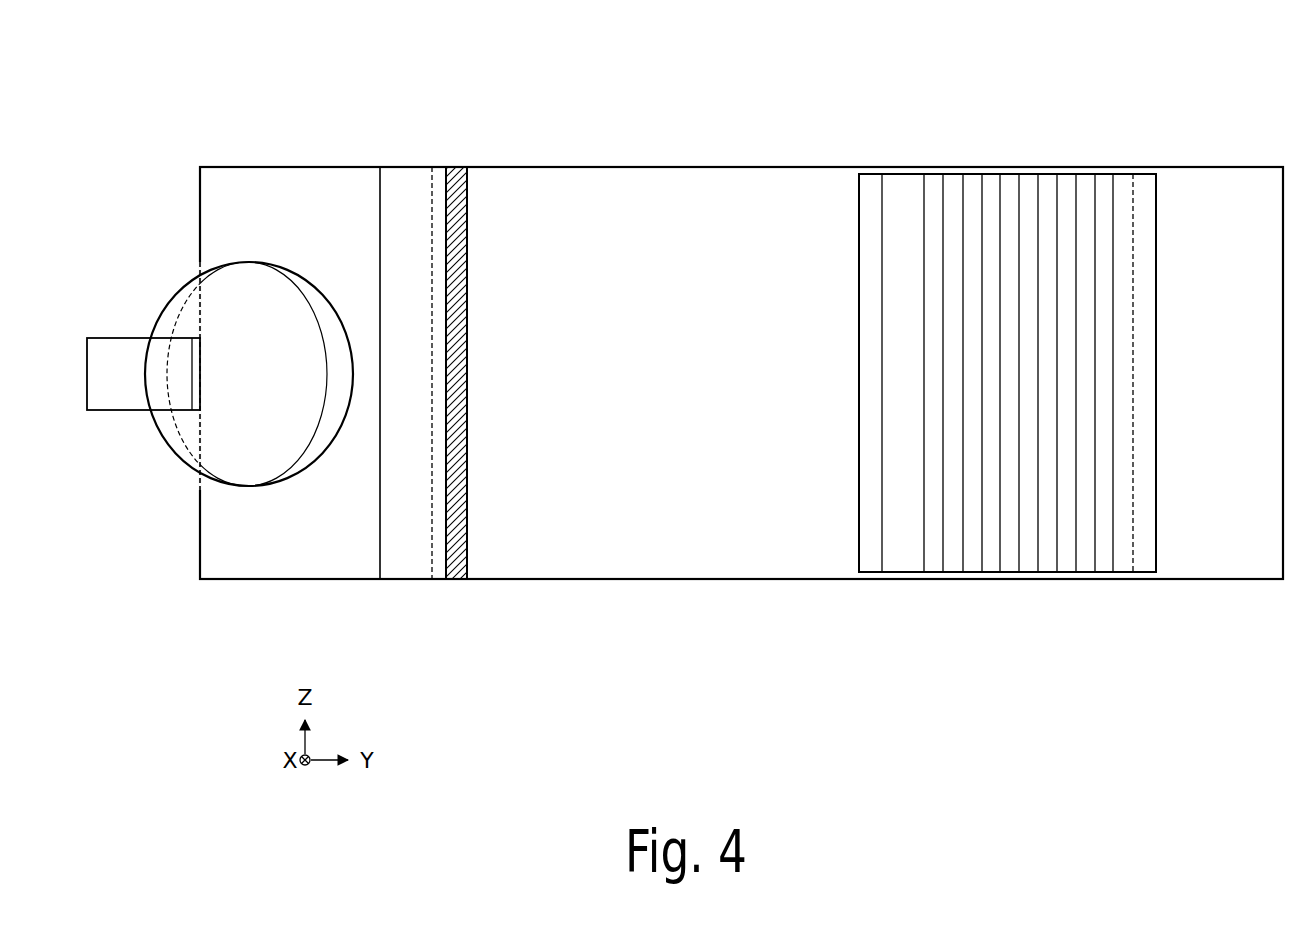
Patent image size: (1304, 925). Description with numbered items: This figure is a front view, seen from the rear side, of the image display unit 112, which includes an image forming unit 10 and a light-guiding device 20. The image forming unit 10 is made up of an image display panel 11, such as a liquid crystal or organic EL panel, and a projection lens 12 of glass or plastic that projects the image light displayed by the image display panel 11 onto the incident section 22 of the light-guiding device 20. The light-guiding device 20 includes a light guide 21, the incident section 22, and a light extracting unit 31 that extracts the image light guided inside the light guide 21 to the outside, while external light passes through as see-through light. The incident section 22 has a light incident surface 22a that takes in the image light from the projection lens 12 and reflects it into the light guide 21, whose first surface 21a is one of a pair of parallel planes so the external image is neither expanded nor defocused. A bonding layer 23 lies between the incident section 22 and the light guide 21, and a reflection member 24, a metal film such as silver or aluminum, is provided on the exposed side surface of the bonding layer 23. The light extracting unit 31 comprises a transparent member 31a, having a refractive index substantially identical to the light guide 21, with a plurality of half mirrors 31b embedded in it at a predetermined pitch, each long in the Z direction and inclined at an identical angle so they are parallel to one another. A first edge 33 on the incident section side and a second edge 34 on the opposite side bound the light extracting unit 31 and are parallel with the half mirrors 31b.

The image display unit 112 is at (654, 100).
The image forming unit 10 is at (220, 478).
The image display panel 11 is at (128, 393).
The projection lens 12 is at (240, 453).
The light-guiding device 20 is at (593, 735).
The light guide 21 is at (684, 588).
The first surface 21a is at (578, 188).
The incident section 22 is at (406, 588).
The light incident surface 22a is at (262, 197).
The bonding layer 23 is at (456, 373).
The reflection member 24 is at (457, 173).
The light extracting unit 31 is at (900, 588).
The transparent member 31a is at (955, 197).
The half mirrors 31b is at (1057, 197).
The first edge 33 is at (867, 202).
The second edge 34 is at (1143, 222).